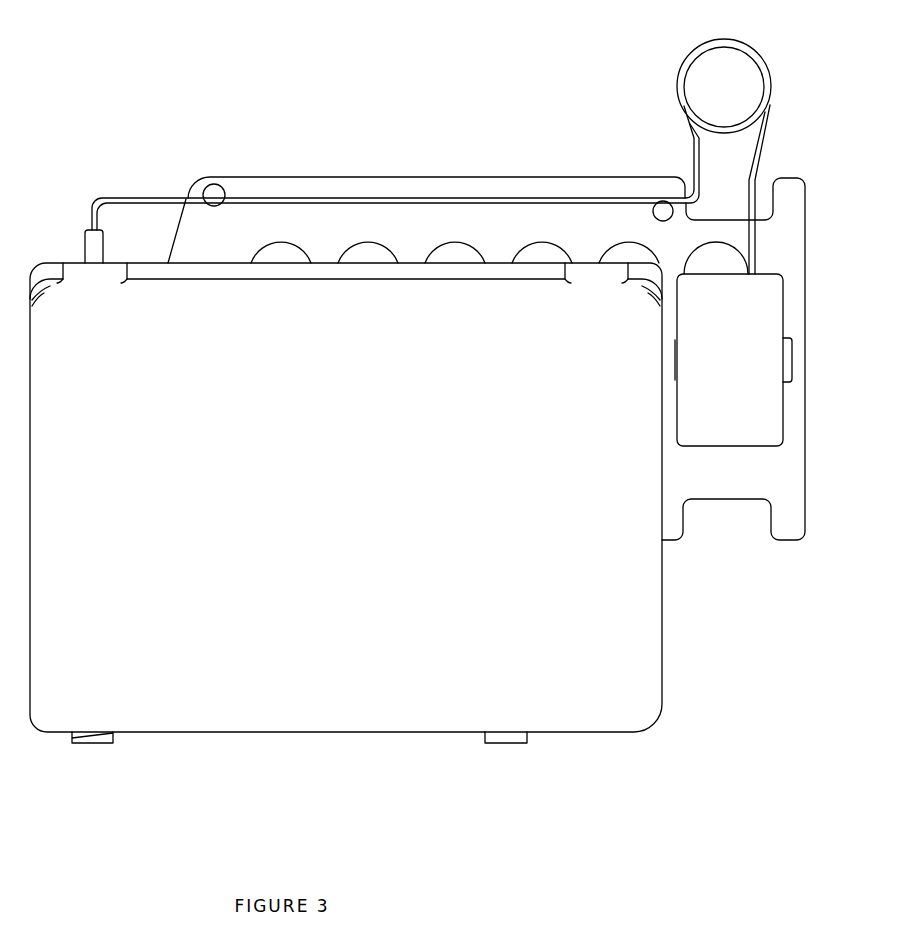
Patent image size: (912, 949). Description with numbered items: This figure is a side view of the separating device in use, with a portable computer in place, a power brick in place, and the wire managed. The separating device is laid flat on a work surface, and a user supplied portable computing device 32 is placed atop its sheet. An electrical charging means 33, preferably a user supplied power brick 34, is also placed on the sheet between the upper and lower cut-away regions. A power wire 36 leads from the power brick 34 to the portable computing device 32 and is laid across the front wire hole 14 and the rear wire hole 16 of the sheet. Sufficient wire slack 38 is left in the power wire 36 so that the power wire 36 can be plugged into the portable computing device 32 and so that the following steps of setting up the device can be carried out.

The front wire hole 14 is at (213, 185).
The rear wire hole 16 is at (663, 218).
The portable computing device 32 is at (602, 733).
The electrical charging means 33 is at (720, 446).
The power brick 34 is at (698, 447).
The power wire 36 is at (430, 199).
The wire slack 38 is at (702, 48).